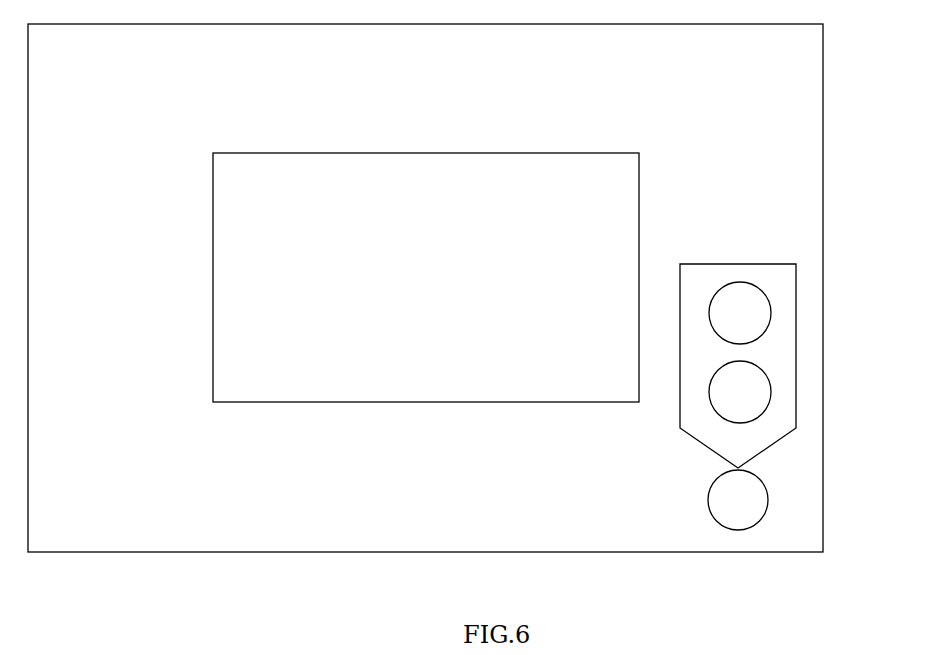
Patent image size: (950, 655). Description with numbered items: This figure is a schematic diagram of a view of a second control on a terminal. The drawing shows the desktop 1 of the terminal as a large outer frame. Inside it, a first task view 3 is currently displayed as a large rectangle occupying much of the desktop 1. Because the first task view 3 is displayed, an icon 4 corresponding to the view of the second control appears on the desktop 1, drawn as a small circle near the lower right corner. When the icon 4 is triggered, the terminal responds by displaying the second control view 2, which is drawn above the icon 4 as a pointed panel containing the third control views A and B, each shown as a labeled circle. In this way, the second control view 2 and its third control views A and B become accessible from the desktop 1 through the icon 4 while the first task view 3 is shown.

The desktop 1 is at (822, 70).
The second control view 2 is at (730, 264).
The first task view 3 is at (611, 153).
The icon 4 is at (710, 495).